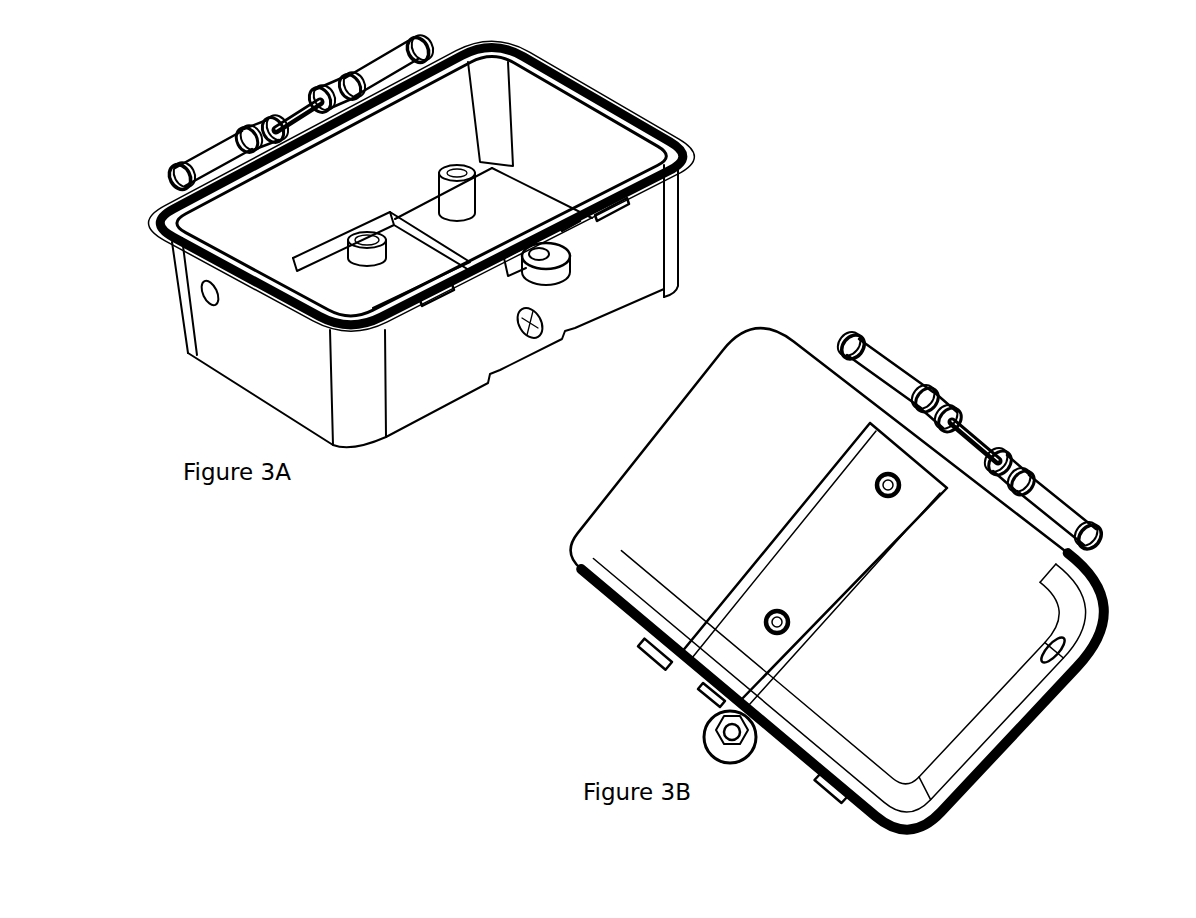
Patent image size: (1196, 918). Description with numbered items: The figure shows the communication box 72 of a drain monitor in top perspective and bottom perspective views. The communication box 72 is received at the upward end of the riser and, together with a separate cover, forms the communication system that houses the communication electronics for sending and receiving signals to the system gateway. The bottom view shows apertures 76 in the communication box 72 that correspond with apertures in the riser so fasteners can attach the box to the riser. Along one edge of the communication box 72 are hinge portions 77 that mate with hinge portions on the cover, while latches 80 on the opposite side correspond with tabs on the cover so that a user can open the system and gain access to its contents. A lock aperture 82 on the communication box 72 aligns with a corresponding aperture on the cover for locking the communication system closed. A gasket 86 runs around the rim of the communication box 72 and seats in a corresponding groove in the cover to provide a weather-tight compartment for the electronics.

In FIG. 3A, the communication box 72 is at (233, 74).
In FIG. 3B, the communication box 72 is at (563, 530).
In FIG. 3B, the apertures 76 is at (898, 478).
In FIG. 3A, the hinge portions 77 is at (388, 68).
In FIG. 3B, the hinge portions 77 is at (885, 372).
In FIG. 3A, the latches 80 is at (445, 303).
In FIG. 3B, the latches 80 is at (660, 648).
In FIG. 3A, the lock aperture 82 is at (567, 287).
In FIG. 3B, the lock aperture 82 is at (704, 728).
In FIG. 3A, the gasket 86 is at (165, 242).